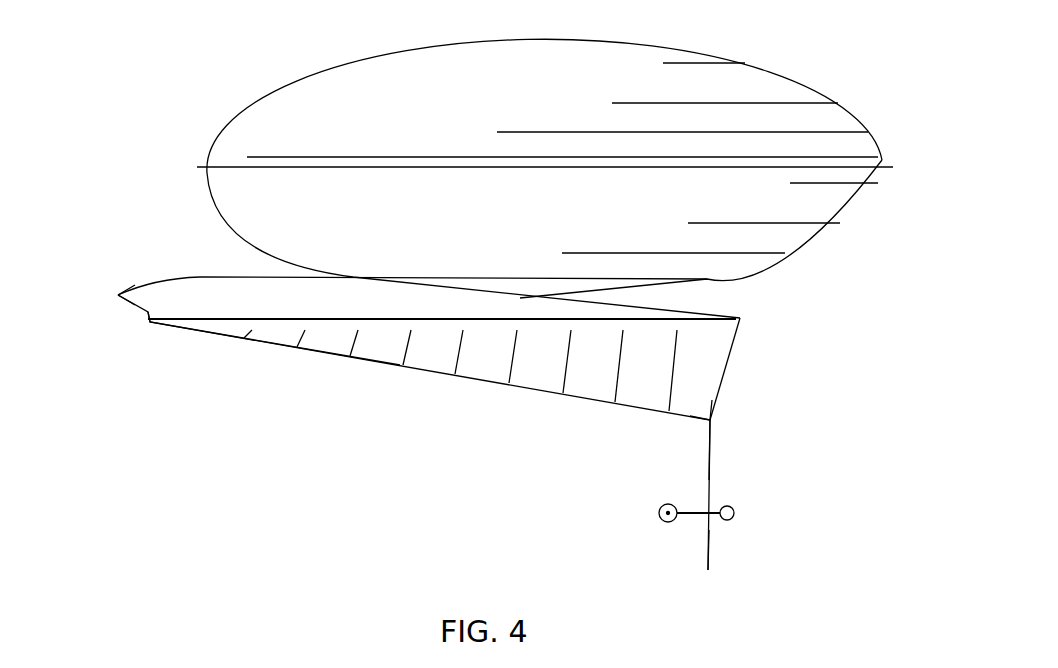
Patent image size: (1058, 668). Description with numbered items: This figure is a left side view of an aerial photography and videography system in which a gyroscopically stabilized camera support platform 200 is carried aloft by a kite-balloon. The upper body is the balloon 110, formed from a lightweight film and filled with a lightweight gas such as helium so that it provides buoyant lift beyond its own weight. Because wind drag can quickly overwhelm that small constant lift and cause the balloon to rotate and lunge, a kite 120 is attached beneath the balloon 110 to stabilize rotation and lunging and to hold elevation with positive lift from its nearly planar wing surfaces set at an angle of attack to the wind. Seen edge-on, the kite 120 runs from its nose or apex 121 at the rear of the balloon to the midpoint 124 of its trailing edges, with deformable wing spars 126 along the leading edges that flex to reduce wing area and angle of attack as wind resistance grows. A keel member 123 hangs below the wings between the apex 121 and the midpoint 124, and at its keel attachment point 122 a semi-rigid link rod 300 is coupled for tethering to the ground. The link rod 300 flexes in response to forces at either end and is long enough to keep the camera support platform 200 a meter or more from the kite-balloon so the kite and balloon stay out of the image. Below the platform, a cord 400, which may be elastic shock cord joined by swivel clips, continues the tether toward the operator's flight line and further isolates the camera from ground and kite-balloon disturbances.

The balloon 110 is at (268, 96).
The kite 120 is at (350, 420).
The nose or apex 121 is at (736, 319).
The keel attachment point 122 is at (712, 420).
The keel member 123 is at (417, 370).
The midpoint of the trailing edges 124 is at (148, 318).
The wing spars 126 is at (118, 295).
The gyroscopically stabilized camera support platform 200 is at (628, 513).
The link rod 300 is at (723, 467).
The cord 400 is at (727, 557).